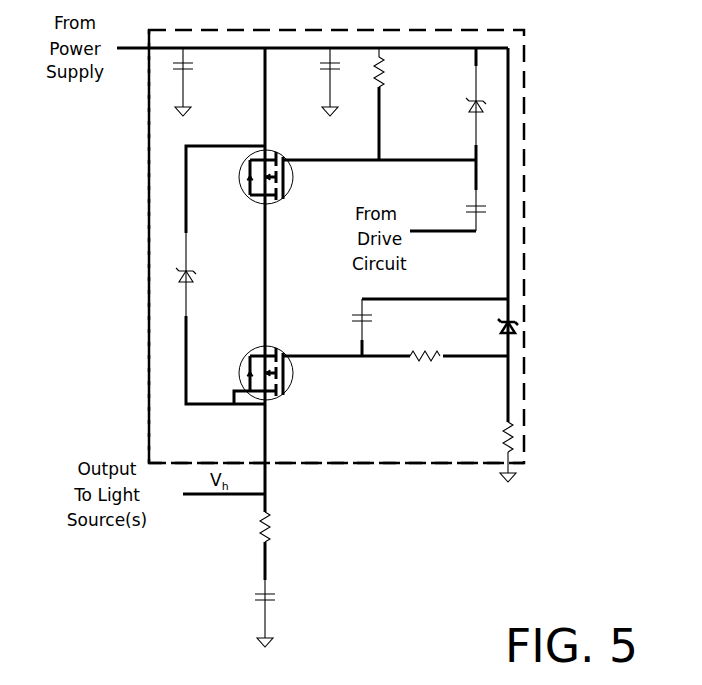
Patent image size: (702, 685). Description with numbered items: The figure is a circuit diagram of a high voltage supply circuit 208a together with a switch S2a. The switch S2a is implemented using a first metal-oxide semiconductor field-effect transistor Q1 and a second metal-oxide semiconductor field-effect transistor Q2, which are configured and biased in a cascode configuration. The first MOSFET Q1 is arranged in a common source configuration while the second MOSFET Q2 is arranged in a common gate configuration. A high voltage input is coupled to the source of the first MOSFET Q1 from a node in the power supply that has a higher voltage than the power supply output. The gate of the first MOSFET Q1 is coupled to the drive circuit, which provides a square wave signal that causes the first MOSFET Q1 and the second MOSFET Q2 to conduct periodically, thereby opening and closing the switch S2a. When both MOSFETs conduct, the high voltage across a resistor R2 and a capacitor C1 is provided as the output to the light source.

The first metal-oxide semiconductor field-effect transistor Q1 is at (357, 177).
The second metal-oxide semiconductor field-effect transistor Q2 is at (373, 373).
The resistor R2 is at (284, 527).
The capacitor C1 is at (282, 613).
The switch S2a is at (138, 228).
The high voltage supply circuit 208a is at (368, 533).